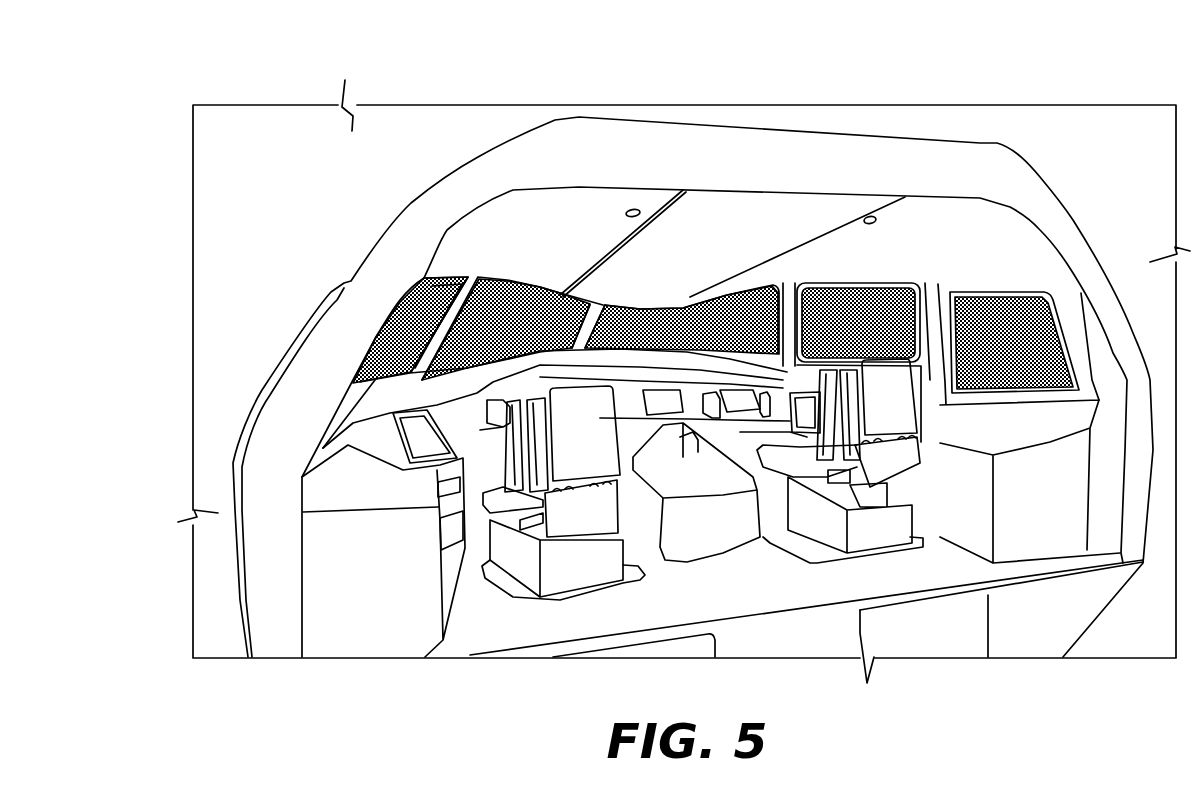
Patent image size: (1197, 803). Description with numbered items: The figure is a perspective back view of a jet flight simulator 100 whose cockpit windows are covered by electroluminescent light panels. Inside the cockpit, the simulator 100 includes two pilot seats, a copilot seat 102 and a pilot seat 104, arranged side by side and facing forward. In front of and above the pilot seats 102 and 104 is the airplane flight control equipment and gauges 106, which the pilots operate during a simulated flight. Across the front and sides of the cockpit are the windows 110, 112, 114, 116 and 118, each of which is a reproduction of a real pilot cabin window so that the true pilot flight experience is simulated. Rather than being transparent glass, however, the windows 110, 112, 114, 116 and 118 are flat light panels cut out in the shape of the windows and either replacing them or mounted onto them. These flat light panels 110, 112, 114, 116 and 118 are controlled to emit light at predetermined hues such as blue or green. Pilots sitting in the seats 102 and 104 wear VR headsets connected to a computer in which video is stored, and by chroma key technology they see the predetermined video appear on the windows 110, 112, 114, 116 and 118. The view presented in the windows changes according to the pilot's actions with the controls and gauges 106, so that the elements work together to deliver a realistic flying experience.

The jet flight simulator 100 is at (862, 140).
The pilot seat (copilot) 102 is at (893, 403).
The pilot seat (pilot) 104 is at (442, 183).
The airplane flight control equipment and gauges 106 is at (670, 477).
The window 110 is at (857, 290).
The window 112 is at (1010, 310).
The window 114 is at (688, 313).
The window 116 is at (535, 285).
The window 118 is at (418, 327).